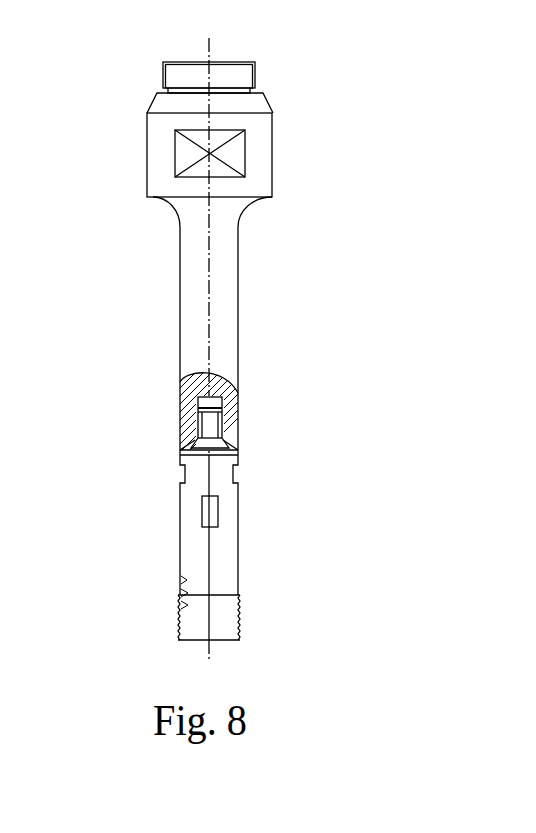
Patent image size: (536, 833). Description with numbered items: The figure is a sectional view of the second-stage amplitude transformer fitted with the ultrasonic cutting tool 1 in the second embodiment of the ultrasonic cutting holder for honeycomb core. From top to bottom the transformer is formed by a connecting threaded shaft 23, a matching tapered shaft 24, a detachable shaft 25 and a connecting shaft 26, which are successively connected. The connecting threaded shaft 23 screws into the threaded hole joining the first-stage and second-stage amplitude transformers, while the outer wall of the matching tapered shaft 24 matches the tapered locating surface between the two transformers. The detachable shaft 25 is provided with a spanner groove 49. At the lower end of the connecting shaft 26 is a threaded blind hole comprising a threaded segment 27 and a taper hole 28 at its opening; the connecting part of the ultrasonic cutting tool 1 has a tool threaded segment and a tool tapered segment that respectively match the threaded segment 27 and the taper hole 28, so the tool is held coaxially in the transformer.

The ultrasonic cutting tool 1 is at (232, 565).
The connecting threaded shaft of the second-stage amplitude transformer 23 is at (238, 78).
The matching tapered shaft of the second-stage amplitude transformer 24 is at (270, 108).
The detachable shaft of the second-stage amplitude transformer 25 is at (262, 170).
The connecting shaft of the ultrasonic cutting tool 26 is at (228, 323).
The threaded segment of the threaded blind hole 27 is at (225, 422).
The taper hole at the opening of the threaded blind hole 28 is at (218, 447).
The spanner groove 49 is at (187, 153).